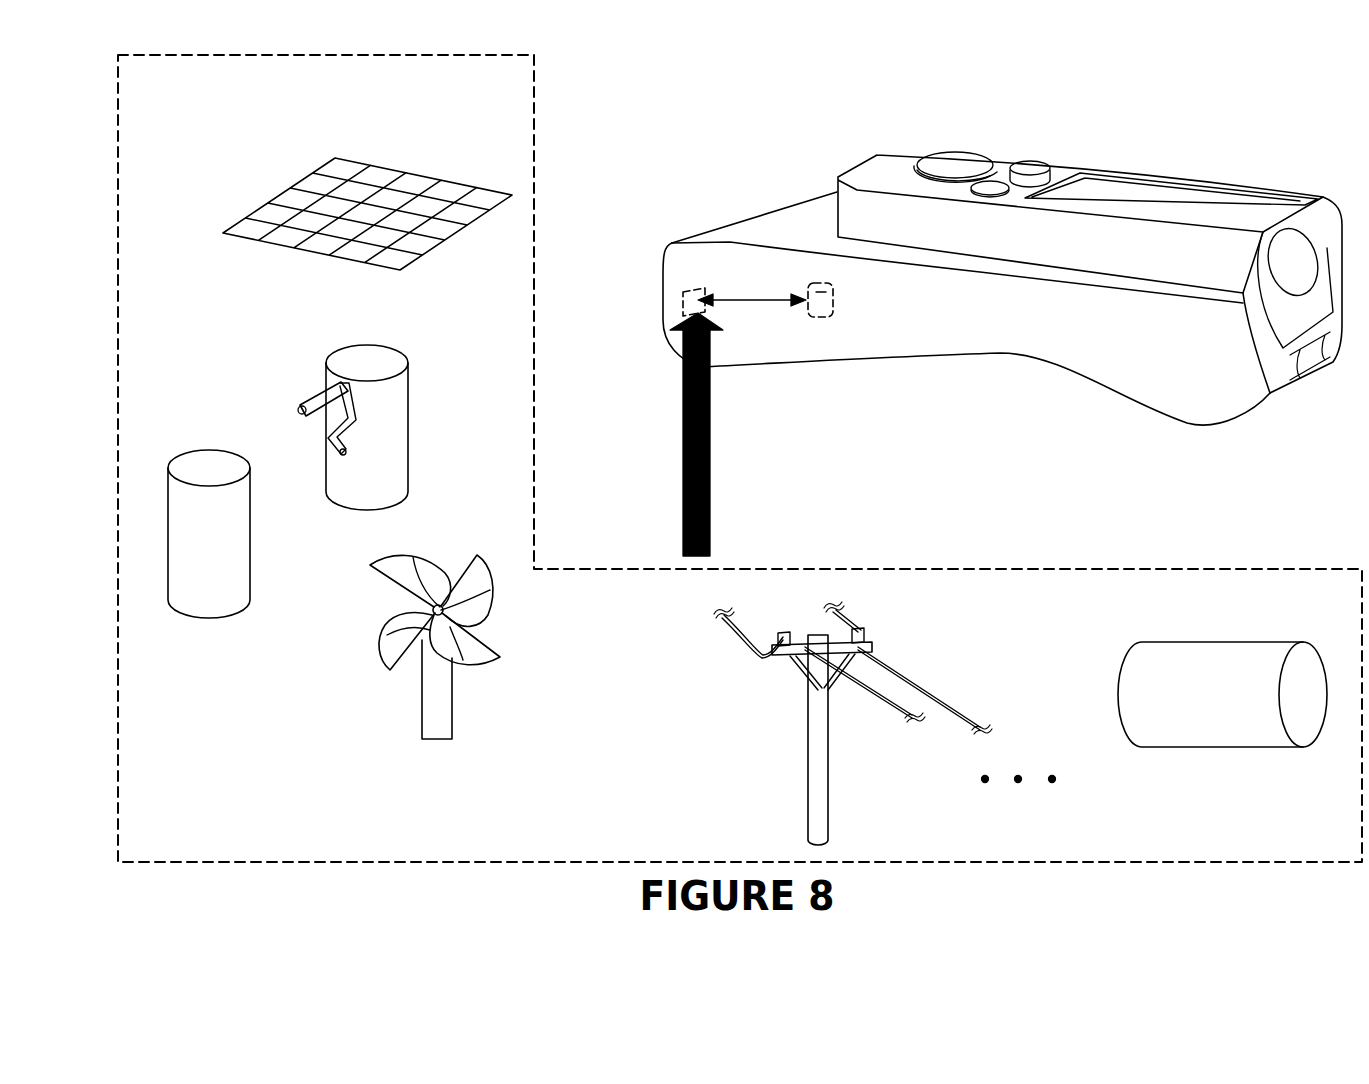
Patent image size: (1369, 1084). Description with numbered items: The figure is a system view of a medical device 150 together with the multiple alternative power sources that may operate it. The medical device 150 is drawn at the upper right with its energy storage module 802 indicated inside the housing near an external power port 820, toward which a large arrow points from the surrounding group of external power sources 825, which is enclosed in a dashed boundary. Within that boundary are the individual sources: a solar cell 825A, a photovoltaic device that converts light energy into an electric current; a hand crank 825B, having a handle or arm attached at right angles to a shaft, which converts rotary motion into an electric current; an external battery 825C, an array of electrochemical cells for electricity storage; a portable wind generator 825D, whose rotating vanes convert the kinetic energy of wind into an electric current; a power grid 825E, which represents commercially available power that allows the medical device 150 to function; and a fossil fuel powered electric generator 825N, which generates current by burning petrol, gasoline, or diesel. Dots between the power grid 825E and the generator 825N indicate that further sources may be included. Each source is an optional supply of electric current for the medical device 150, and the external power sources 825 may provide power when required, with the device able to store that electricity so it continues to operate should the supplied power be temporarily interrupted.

The external power sources 825 is at (1082, 858).
The solar cell 825A is at (412, 185).
The hand crank 825B is at (328, 361).
The external battery 825C is at (207, 612).
The portable wind generator 825D is at (436, 735).
The power grid 825E is at (815, 757).
The fossil fuel powered electric generator 825N is at (1227, 740).
The medical device 150 is at (1227, 395).
The energy storage module 802 is at (812, 283).
The external power port 820 is at (703, 307).